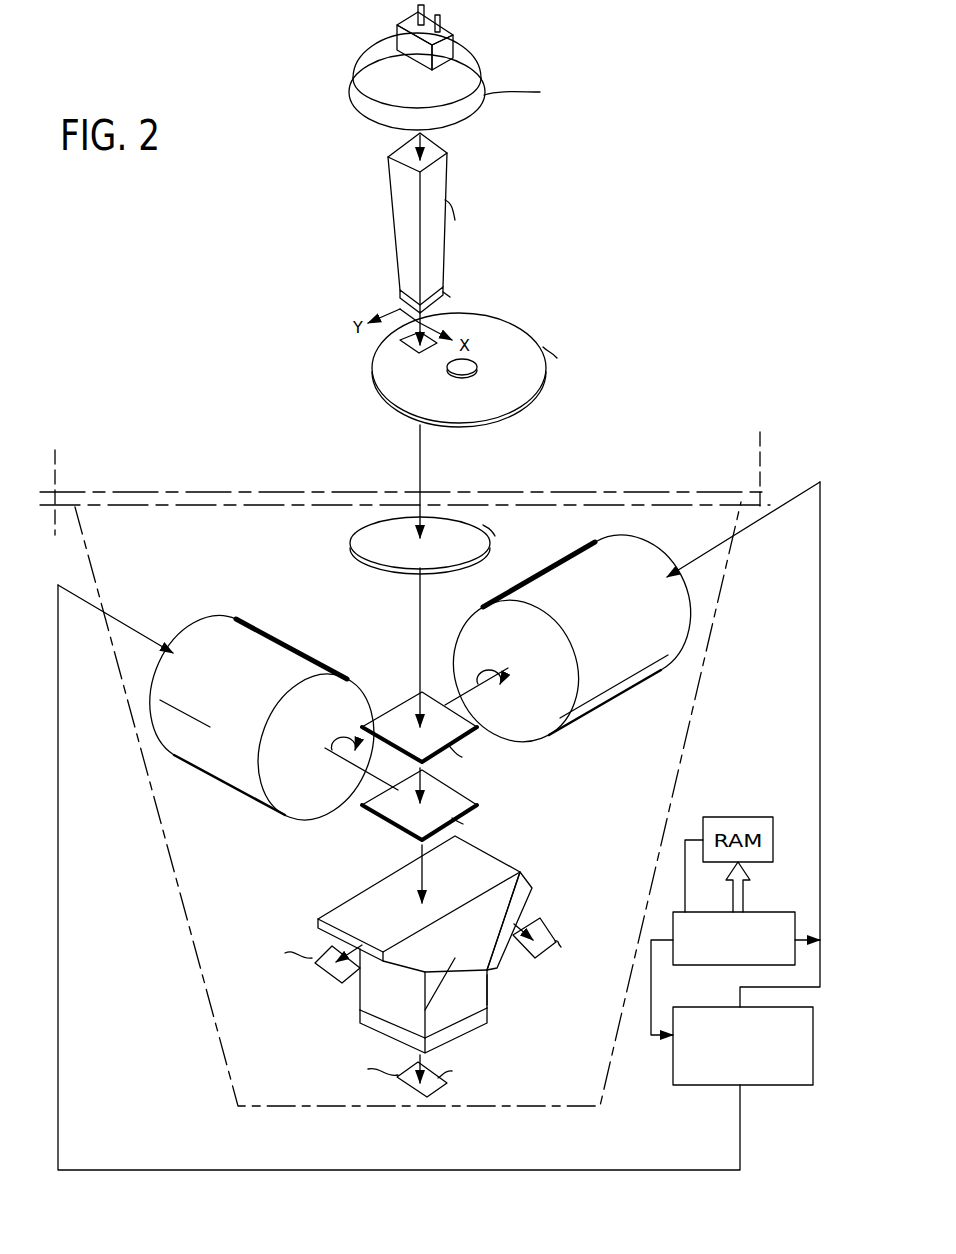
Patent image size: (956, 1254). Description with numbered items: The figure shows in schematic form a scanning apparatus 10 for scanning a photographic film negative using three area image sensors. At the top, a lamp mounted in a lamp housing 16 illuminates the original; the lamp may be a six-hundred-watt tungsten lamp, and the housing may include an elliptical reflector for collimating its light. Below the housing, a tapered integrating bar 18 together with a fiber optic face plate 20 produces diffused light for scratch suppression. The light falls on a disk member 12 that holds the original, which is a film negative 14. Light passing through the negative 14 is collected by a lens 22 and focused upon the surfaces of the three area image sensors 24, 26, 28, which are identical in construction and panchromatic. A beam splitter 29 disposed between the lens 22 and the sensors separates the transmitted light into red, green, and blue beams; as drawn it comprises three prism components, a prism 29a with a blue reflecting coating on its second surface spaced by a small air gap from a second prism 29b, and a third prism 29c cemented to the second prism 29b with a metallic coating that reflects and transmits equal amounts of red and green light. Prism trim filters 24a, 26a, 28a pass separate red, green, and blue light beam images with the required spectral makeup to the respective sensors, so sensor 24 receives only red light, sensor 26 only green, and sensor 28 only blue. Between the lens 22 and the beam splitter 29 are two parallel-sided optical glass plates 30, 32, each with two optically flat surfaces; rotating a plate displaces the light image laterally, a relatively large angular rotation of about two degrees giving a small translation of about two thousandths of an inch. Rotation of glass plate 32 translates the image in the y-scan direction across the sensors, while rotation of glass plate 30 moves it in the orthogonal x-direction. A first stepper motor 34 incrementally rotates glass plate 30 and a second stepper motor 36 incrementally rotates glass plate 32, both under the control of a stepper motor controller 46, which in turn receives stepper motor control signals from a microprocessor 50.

The scanning apparatus 10 is at (273, 437).
The disk member 12 is at (527, 392).
The film negative 14 is at (400, 341).
The lamp housing 16 is at (366, 70).
The tapered integrating bar 18 is at (397, 200).
The fiber optic face plate 20 is at (400, 294).
The lens 22 is at (350, 546).
The area image sensor 24 is at (550, 934).
The prism trim filter 24a is at (540, 888).
The area image sensor 26 is at (405, 1088).
The prism trim filter 26a is at (470, 1027).
The area image sensor 28 is at (316, 975).
The prism trim filter 28a is at (318, 920).
The beam splitter 29 is at (438, 944).
The prism 29a is at (540, 870).
The second prism 29b is at (387, 1032).
The third prism 29c is at (487, 994).
The glass plate 30 is at (395, 708).
The glass plate 32 is at (380, 820).
The first stepper motor 34 is at (633, 553).
The second stepper motor 36 is at (280, 647).
The stepper motor controller 46 is at (710, 1086).
The microprocessor 50 is at (708, 966).